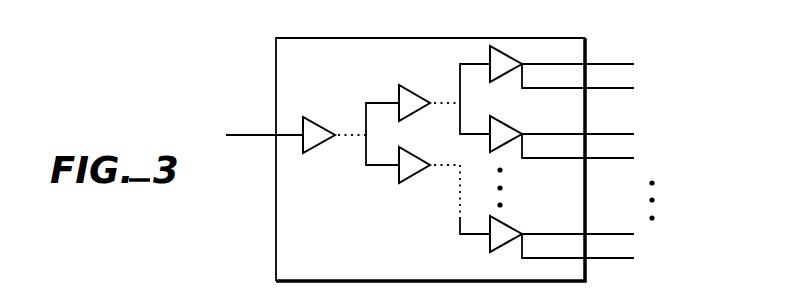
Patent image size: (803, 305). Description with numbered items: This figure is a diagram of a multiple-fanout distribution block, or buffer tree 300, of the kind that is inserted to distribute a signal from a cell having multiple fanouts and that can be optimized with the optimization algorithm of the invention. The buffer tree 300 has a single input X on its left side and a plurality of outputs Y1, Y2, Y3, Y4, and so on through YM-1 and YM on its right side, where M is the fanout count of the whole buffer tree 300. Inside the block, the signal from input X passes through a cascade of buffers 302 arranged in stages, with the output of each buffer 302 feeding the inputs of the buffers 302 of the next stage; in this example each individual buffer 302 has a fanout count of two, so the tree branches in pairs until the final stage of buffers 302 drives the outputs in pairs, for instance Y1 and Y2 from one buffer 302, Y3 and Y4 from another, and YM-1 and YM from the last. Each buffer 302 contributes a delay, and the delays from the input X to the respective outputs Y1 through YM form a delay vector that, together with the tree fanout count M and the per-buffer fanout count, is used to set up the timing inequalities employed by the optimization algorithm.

The buffer tree 300 is at (276, 93).
The buffer 302 is at (399, 90).
The input X is at (255, 134).
The output y1 Y1 is at (591, 66).
The output y2 Y2 is at (591, 84).
The output y3 Y3 is at (591, 136).
The output y4 Y4 is at (591, 154).
The output yM-1 YM-1 is at (600, 236).
The output yM YM is at (593, 254).